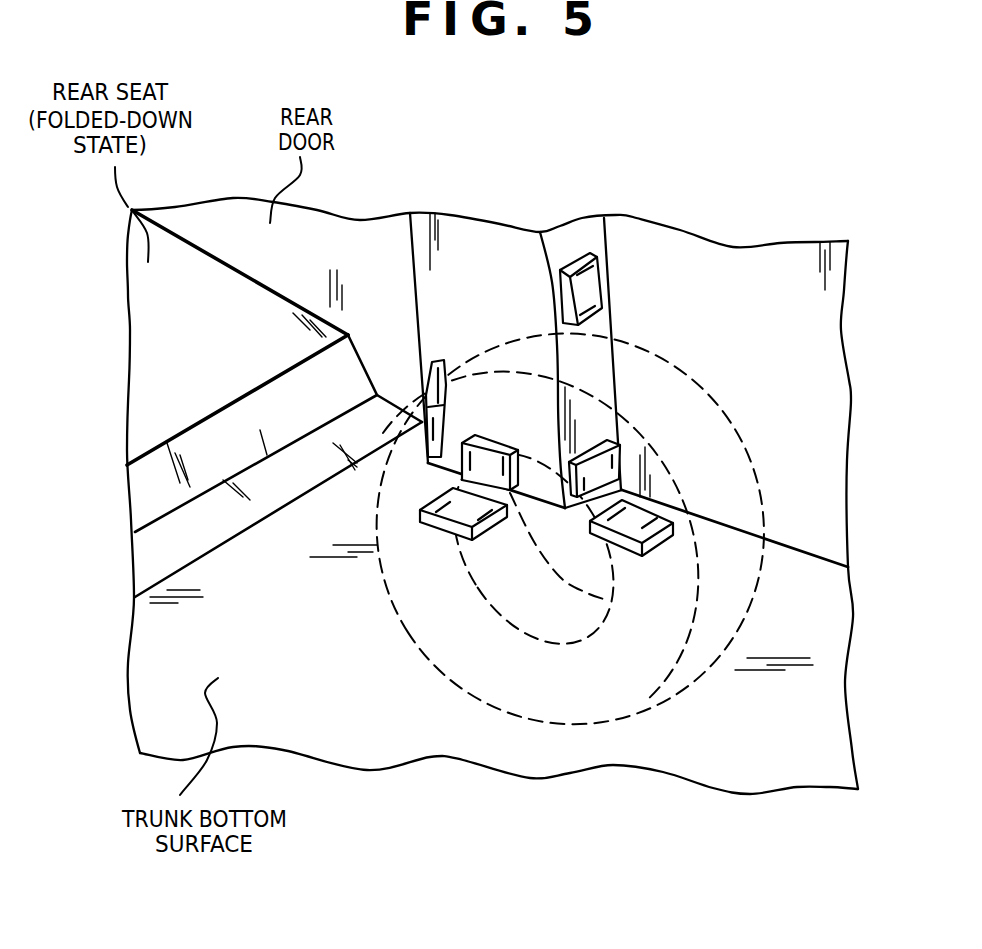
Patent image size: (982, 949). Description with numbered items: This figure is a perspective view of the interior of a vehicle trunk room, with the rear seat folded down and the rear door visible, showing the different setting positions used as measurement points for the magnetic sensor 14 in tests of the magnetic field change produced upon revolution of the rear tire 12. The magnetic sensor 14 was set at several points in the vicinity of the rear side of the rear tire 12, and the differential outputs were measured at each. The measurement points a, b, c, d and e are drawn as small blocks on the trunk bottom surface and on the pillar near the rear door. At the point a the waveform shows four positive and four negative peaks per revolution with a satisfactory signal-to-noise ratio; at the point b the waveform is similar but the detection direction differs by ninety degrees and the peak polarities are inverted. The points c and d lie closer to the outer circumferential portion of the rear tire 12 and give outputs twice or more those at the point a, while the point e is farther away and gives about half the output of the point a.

The rear tire 12 is at (697, 412).
The magnetic sensor 14 is at (573, 257).
The measurement point a is at (463, 514).
The measurement point b is at (490, 462).
The measurement point c is at (594, 468).
The measurement point d is at (631, 528).
The measurement point e is at (443, 408).